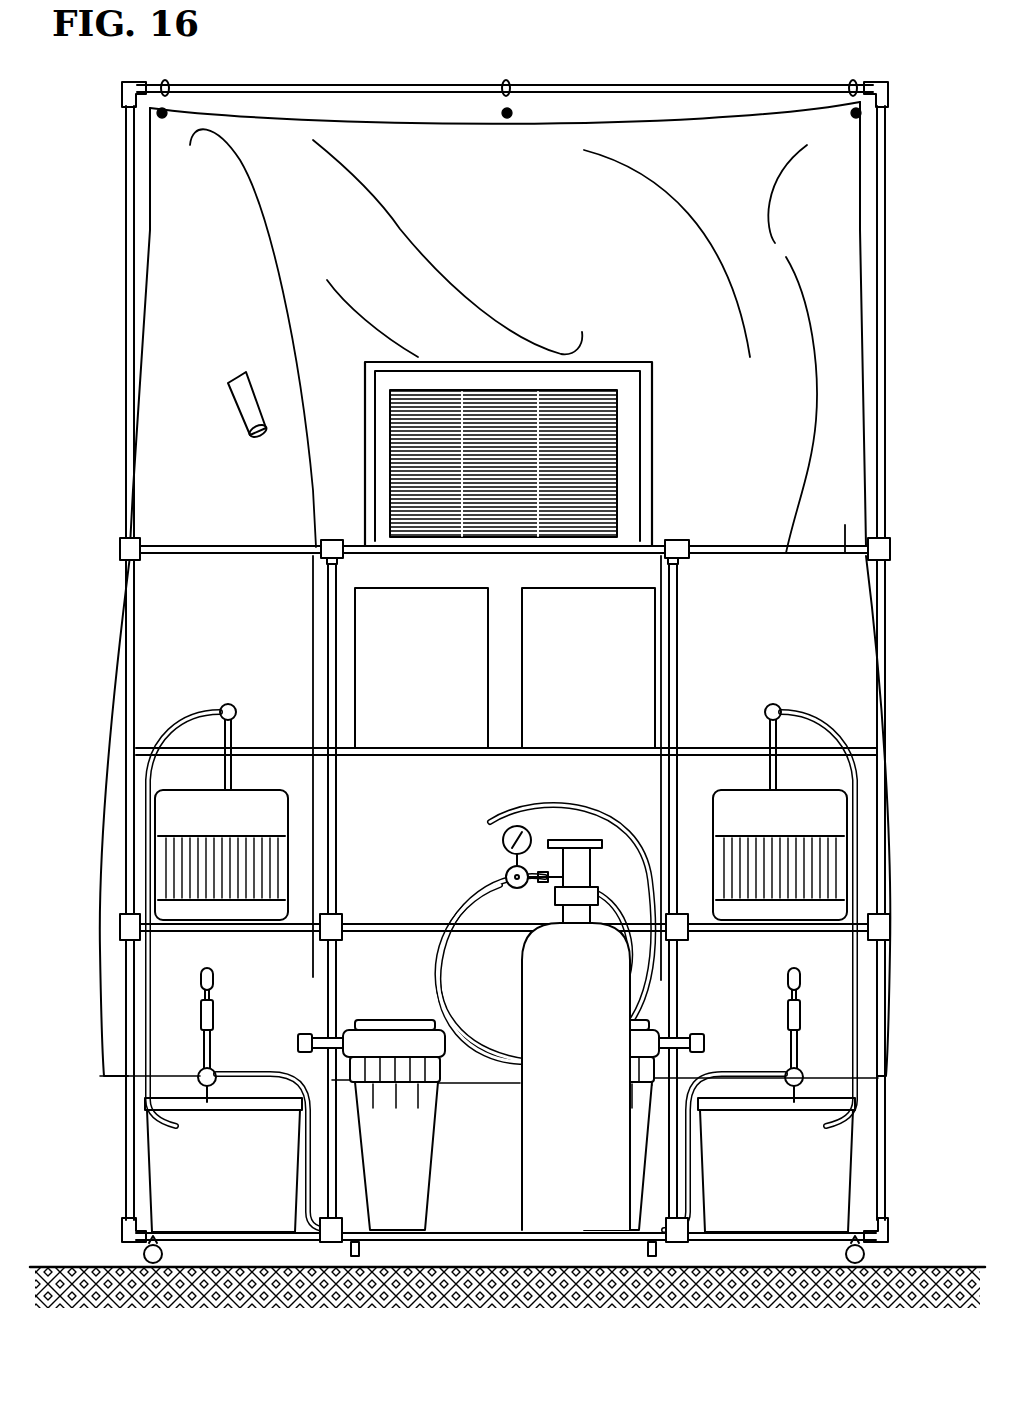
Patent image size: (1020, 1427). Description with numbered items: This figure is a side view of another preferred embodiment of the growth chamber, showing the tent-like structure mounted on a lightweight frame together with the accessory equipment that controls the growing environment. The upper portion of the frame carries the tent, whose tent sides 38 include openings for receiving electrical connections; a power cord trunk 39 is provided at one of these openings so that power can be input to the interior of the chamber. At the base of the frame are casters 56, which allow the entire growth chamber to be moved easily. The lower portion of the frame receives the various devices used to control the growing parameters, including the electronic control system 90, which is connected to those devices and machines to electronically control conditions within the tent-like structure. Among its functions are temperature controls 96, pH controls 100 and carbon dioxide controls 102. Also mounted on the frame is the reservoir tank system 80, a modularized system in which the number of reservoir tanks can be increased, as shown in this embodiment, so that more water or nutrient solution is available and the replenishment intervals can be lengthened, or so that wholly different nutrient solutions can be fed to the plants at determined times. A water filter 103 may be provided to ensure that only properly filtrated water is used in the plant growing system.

The tent sides 38 is at (150, 225).
The power cord trunk 39 is at (238, 392).
The casters 56 is at (143, 1253).
The reservoir tank system 80 is at (238, 1185).
The electronic control system 90 is at (363, 613).
The temperature controls 96 is at (632, 364).
The pH controls 100 is at (263, 810).
The carbon dioxide controls 102 is at (595, 985).
The water filter 103 is at (413, 1020).